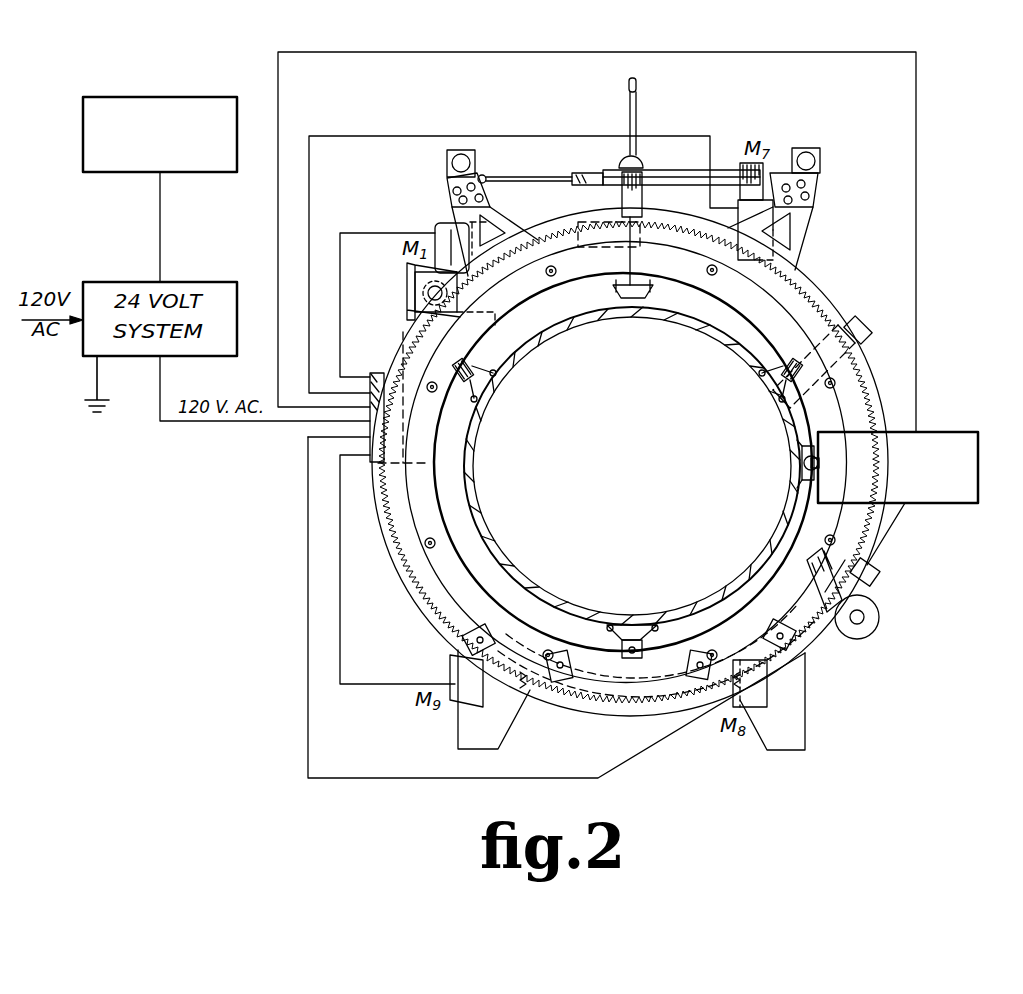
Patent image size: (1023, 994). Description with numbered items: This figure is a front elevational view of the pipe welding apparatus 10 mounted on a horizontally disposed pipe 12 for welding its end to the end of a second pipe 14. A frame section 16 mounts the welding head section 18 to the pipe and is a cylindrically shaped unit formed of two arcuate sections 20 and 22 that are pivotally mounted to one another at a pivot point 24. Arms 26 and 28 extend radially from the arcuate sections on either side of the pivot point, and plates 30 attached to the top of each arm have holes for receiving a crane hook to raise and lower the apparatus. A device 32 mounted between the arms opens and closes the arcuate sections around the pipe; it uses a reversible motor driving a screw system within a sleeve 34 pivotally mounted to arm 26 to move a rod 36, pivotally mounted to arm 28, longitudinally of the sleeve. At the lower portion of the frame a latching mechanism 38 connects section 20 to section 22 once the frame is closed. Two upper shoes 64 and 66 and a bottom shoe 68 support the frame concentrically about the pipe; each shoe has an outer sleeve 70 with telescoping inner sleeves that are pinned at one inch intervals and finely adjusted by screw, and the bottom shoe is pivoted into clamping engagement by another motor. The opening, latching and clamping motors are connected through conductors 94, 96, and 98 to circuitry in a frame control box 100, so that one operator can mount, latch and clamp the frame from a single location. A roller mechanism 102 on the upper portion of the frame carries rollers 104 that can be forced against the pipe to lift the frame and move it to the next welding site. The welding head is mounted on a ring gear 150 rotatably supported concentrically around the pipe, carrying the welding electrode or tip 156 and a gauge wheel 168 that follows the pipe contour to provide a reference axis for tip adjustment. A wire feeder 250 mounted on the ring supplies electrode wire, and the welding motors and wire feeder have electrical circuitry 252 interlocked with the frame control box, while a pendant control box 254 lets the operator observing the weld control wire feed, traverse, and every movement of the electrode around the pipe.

The apparatus 10 is at (807, 131).
The pipe 12 is at (632, 466).
The second pipe 14 is at (566, 316).
The frame section 16 is at (824, 274).
The welding head section 18 is at (986, 426).
The arcuate section 20 is at (822, 306).
The arcuate section 22 is at (396, 351).
The pivot point 24 is at (634, 222).
The arm 26 is at (800, 216).
The arm 28 is at (446, 208).
The plate 30 is at (447, 164).
The device 32 is at (540, 150).
The sleeve 34 is at (651, 174).
The rod 36 is at (526, 189).
The latching mechanism 38 is at (716, 632).
The upper shoe 64 is at (766, 350).
The upper shoe 66 is at (477, 356).
The bottom shoe 68 is at (657, 626).
The outer sleeve 70 is at (862, 326).
The conductor 94 is at (460, 136).
The conductor 96 is at (354, 778).
The conductor 98 is at (340, 639).
The frame control box 100 is at (324, 428).
The roller mechanism 102 is at (654, 100).
The rollers 104 is at (643, 312).
The ring gear 150 is at (852, 362).
The welding electrode or tip 156 is at (800, 438).
The gauge wheel 168 is at (804, 484).
The wire feeder 250 is at (878, 582).
The electrical circuitry 252 is at (916, 246).
The pendant control box 254 is at (172, 97).